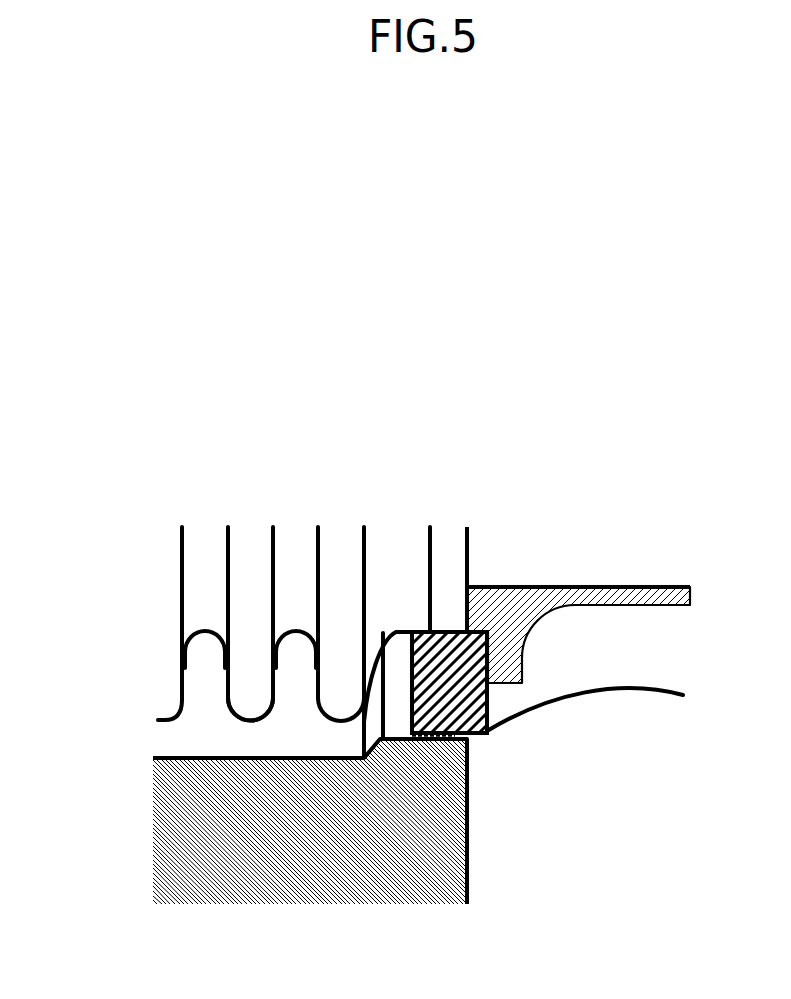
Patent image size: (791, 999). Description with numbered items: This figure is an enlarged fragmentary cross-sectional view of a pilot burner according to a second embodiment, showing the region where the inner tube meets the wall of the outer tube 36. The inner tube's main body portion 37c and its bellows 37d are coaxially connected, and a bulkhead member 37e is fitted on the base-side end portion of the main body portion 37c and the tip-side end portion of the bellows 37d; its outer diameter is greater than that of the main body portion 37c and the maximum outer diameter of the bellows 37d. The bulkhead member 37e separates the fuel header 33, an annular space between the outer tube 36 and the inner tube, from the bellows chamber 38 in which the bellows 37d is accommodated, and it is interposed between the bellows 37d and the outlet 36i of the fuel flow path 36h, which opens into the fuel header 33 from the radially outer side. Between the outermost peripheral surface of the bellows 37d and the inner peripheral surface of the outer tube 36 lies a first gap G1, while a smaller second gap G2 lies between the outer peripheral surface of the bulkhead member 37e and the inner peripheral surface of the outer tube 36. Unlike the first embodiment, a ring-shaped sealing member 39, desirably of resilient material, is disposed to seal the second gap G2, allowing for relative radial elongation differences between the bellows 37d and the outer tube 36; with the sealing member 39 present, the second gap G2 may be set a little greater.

The fuel header 33 is at (612, 678).
The outer tube 36 is at (331, 860).
The fuel flow path 36h is at (467, 873).
The outlet of the fuel flow path 36i is at (462, 742).
The main body portion 37c is at (635, 606).
The bellows 37d is at (252, 720).
The bulkhead member 37e is at (488, 705).
The bellows chamber 38 is at (223, 748).
The sealing member 39 is at (430, 740).
The first gap G1 is at (148, 721).
The second gap G2 is at (400, 731).